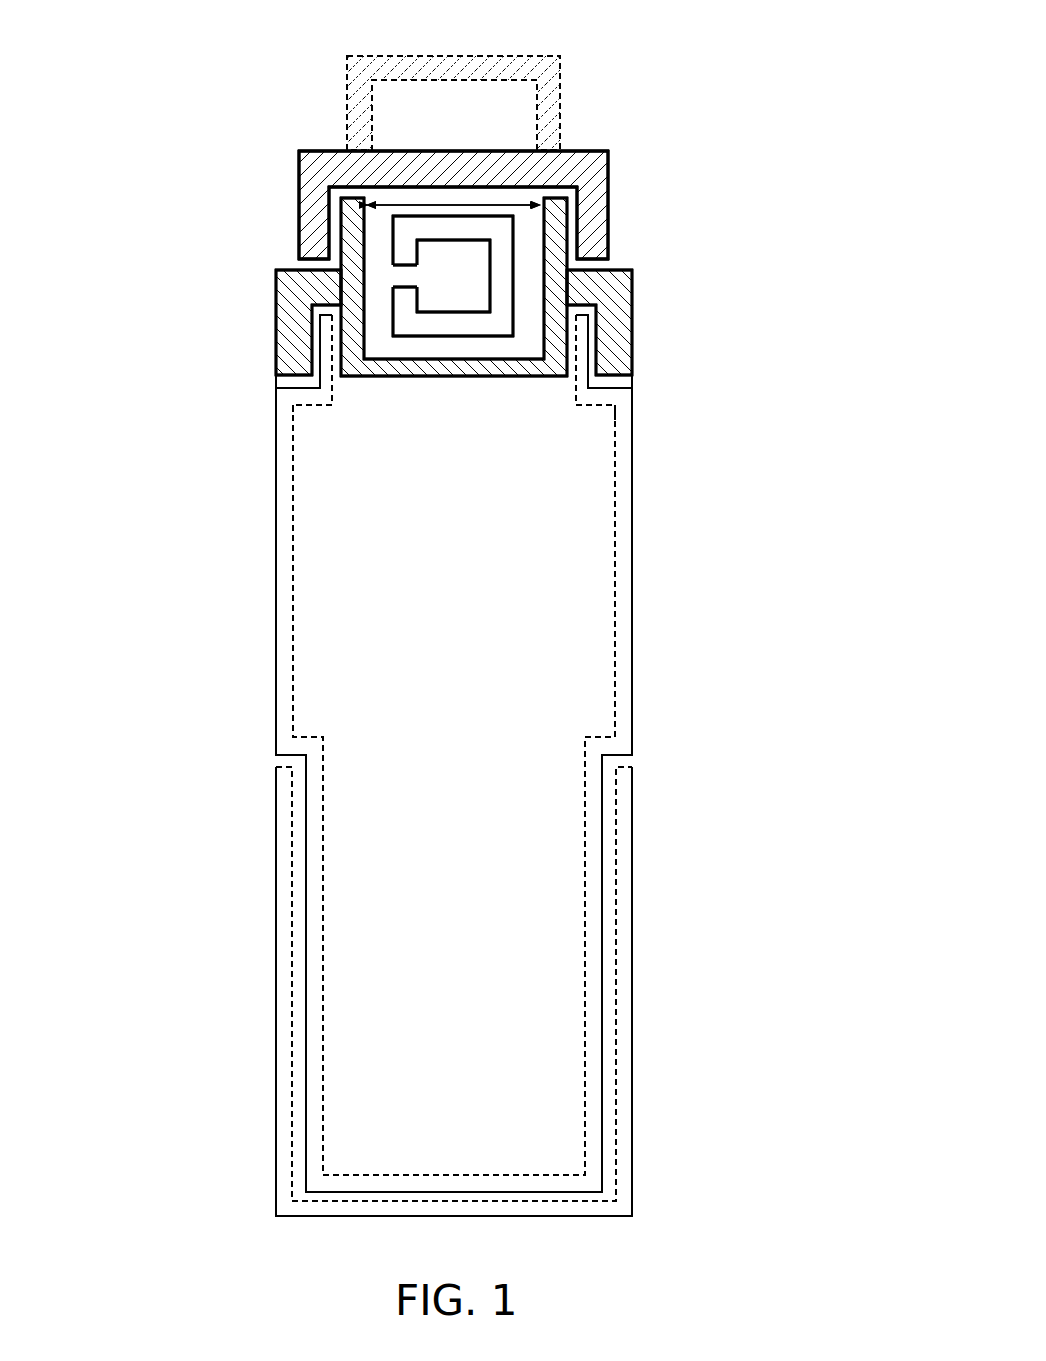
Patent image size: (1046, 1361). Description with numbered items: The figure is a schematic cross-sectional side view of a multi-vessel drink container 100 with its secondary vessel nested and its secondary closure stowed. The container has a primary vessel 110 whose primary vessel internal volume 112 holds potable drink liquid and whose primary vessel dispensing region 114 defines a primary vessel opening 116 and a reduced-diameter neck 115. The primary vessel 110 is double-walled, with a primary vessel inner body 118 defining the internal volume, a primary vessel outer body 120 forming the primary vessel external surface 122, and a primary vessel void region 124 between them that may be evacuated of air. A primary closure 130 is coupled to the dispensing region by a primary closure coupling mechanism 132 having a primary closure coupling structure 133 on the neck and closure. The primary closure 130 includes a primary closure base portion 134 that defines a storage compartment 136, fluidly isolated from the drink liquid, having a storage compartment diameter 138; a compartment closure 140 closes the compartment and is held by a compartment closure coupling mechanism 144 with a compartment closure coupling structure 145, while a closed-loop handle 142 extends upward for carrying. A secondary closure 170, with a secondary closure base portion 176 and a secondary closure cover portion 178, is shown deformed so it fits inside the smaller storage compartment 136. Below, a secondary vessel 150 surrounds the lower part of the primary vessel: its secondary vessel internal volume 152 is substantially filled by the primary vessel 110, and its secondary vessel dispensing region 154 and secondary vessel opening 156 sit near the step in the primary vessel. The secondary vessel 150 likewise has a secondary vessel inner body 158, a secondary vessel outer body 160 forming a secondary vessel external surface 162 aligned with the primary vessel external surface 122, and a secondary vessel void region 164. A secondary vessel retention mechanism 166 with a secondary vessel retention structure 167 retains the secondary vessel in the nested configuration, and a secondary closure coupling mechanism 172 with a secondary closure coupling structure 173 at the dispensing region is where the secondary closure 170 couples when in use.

The multi-vessel drink container 100 is at (258, 48).
The primary vessel 110 is at (250, 484).
The primary vessel internal volume 112 is at (336, 572).
The primary vessel dispensing region 114 is at (313, 327).
The neck 115 is at (333, 338).
The primary vessel opening 116 is at (316, 331).
The primary vessel inner body 118 is at (612, 505).
The primary vessel outer body 120 is at (637, 460).
The primary vessel external surface 122 is at (633, 498).
The primary vessel void region 124 is at (622, 558).
The primary closure 130 is at (626, 212).
The primary closure coupling mechanism 132 is at (570, 333).
The primary closure coupling structure 133 is at (590, 382).
The primary closure base portion 134 is at (637, 277).
The storage compartment 136 is at (378, 249).
The storage compartment diameter 138 is at (460, 204).
The compartment closure 140 is at (586, 150).
The handle 142 is at (562, 90).
The compartment closure coupling mechanism 144 is at (572, 211).
The compartment closure coupling structure 145 is at (581, 252).
The secondary vessel 150 is at (647, 893).
The secondary vessel internal volume 152 is at (350, 946).
The secondary vessel dispensing region 154 is at (275, 772).
The secondary vessel opening 156 is at (296, 778).
The secondary vessel inner body 158 is at (610, 975).
The secondary vessel outer body 160 is at (634, 968).
The secondary vessel external surface 162 is at (633, 1008).
The secondary vessel void region 164 is at (622, 1078).
The secondary vessel retention mechanism 166 is at (610, 772).
The secondary vessel retention structure 167 is at (608, 820).
The secondary closure 170 is at (451, 343).
The secondary closure coupling mechanism 172 is at (275, 780).
The secondary closure coupling structure 173 is at (276, 794).
The secondary closure base portion 176 is at (395, 300).
The secondary closure cover portion 178 is at (513, 262).